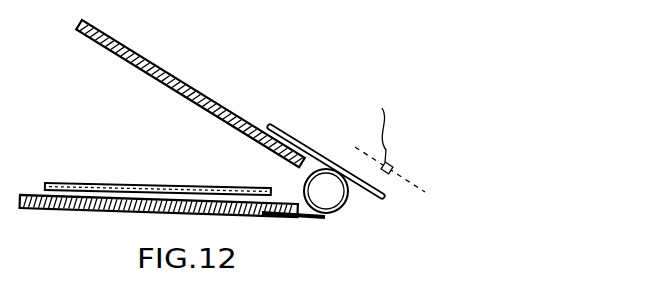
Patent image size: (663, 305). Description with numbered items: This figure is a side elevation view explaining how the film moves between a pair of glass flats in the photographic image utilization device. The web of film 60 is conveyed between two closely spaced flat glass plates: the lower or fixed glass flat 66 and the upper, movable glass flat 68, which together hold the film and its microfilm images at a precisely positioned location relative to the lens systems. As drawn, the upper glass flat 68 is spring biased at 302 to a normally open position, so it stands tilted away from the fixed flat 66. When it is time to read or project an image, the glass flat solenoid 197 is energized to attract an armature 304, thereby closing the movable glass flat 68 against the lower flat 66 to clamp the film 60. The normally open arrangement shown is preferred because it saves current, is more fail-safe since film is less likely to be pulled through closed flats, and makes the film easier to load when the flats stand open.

The film 60 is at (97, 183).
The lower glass flat 66 is at (53, 210).
The upper glass flat 68 is at (183, 82).
The glass flat solenoid 197 is at (390, 163).
The spring bias 302 is at (344, 206).
The armature 304 is at (383, 196).